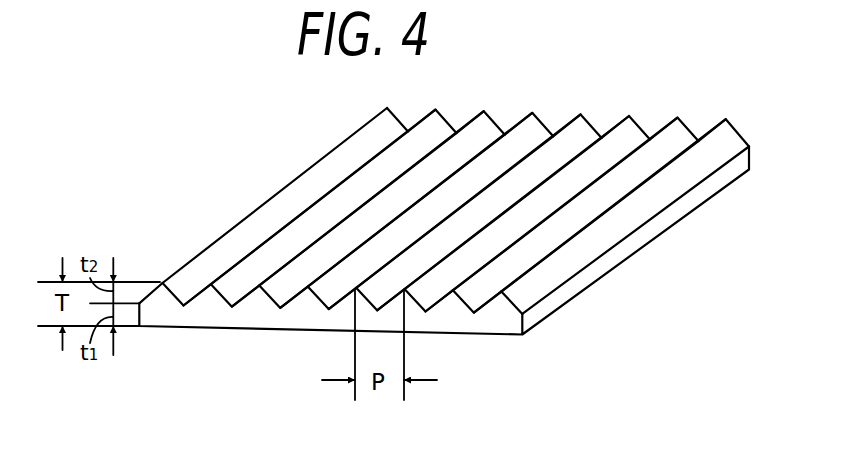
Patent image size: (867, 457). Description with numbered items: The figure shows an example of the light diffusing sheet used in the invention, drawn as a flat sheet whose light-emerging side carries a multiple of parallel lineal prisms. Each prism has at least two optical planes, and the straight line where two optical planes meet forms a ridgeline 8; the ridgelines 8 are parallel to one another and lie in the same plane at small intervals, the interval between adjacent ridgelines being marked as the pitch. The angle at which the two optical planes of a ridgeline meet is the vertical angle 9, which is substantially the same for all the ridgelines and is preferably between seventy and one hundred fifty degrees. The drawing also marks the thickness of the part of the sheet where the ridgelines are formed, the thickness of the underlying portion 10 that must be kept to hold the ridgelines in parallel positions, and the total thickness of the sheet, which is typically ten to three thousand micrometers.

The ridgeline 8 is at (256, 212).
The vertical angle 9 is at (265, 290).
The base plate 10 is at (510, 320).